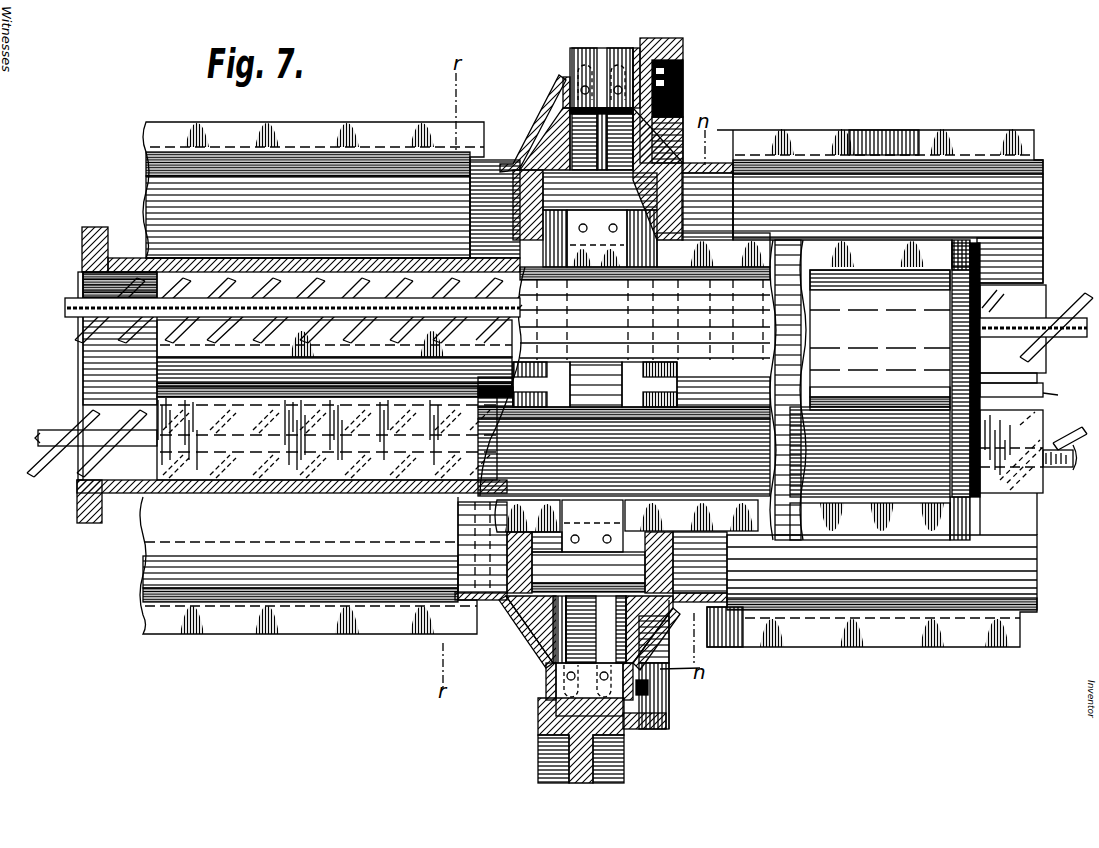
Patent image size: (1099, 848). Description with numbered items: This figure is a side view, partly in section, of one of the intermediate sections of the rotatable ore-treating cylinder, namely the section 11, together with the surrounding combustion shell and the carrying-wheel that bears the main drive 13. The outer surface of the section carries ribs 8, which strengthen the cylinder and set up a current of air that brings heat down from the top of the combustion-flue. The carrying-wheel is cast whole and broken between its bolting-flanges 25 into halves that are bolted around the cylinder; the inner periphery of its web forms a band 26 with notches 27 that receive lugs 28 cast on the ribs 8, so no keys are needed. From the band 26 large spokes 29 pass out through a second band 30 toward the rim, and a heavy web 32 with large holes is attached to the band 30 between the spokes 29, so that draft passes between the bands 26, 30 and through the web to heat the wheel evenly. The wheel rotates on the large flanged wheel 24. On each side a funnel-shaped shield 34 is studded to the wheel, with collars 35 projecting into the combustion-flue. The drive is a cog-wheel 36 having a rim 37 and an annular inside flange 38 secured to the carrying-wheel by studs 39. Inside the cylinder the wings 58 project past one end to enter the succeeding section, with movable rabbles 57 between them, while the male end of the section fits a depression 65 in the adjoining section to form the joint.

The ribs 8 is at (688, 380).
The section 11 is at (875, 390).
The main drive 13 is at (703, 655).
The flanged wheel 24 is at (540, 752).
The bolting-flanges 25 is at (584, 54).
The band 26 is at (573, 547).
The notches 27 is at (628, 390).
The lugs 28 is at (546, 371).
The spokes 29 is at (596, 208).
The band 30 is at (546, 139).
The web 32 is at (683, 105).
The funnel-shaped shield 34 is at (558, 110).
The collars or flanges 35 is at (470, 593).
The cog-wheel 36 is at (647, 676).
The rim 37 is at (683, 48).
The annular inside flange 38 is at (683, 88).
The studs 39 is at (650, 690).
The movable rabbles 57 is at (78, 316).
The wings or treating-plates 58 is at (1040, 356).
The depression 65 is at (78, 483).